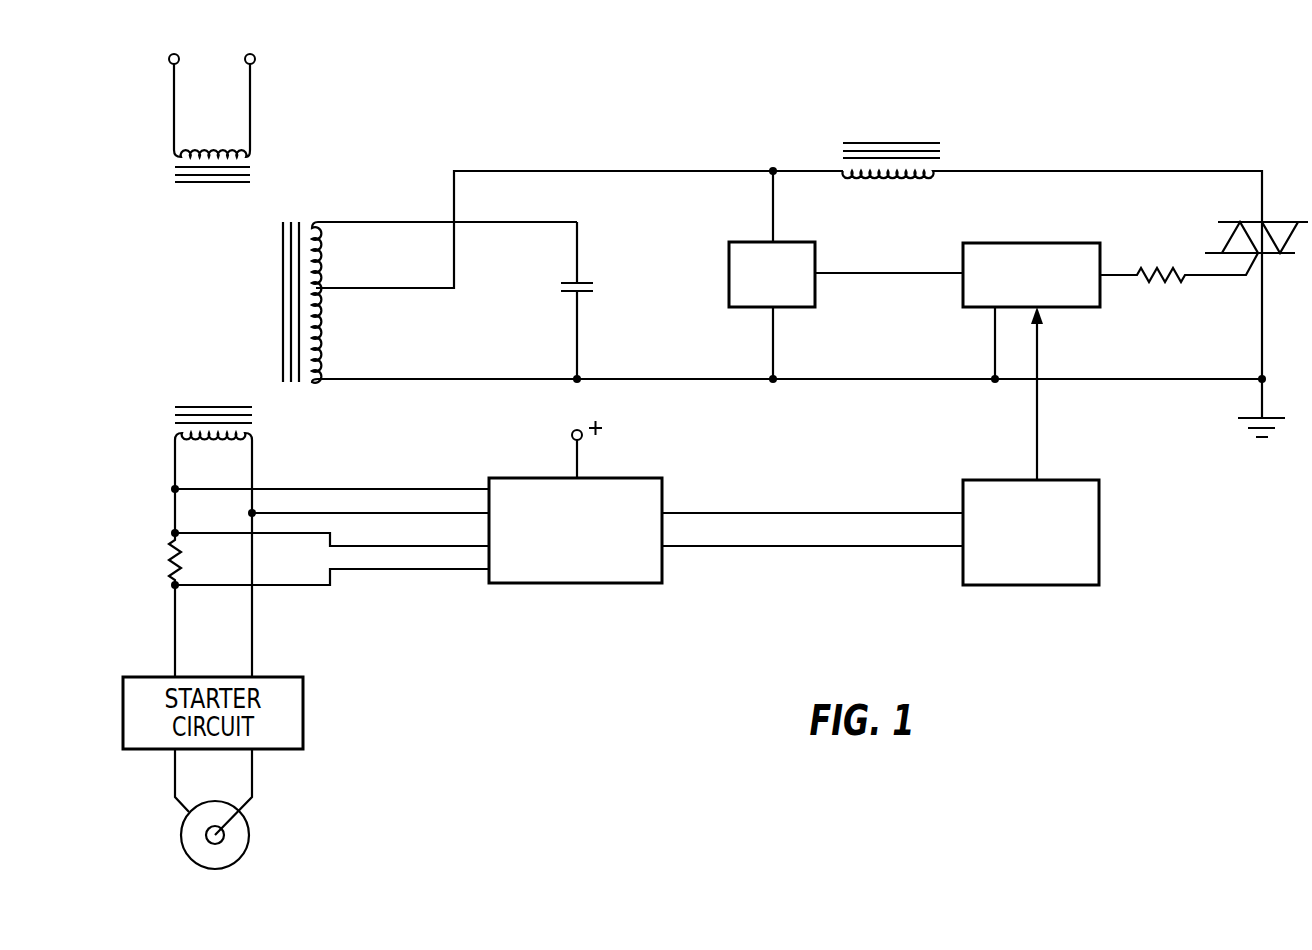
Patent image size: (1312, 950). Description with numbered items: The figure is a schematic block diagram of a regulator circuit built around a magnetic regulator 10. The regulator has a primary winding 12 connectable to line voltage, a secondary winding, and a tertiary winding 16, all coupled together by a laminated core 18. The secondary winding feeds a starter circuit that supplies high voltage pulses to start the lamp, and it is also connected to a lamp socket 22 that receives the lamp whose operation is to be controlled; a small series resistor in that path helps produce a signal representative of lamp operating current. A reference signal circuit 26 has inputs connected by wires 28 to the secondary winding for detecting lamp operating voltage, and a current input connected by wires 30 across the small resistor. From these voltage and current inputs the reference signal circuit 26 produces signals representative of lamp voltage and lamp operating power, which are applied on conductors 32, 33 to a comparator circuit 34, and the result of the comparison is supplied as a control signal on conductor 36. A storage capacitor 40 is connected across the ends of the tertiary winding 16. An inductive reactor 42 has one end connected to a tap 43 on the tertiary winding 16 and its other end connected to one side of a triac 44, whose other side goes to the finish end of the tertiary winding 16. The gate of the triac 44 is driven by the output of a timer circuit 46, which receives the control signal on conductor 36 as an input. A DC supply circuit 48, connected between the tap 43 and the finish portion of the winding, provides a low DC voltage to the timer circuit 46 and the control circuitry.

The magnetic regulator 10 is at (254, 292).
The primary winding 12 is at (212, 150).
The tertiary winding 16 is at (318, 238).
The laminated core 18 is at (283, 305).
The tap 43 is at (316, 288).
The storage capacitor 40 is at (580, 280).
The inductive reactor 42 is at (940, 162).
The triac 44 is at (1273, 219).
The timer circuit 46 is at (1078, 309).
The DC supply circuit 48 is at (748, 310).
The conductor 36 is at (1052, 393).
The wires 28 is at (332, 512).
The wires 30 is at (350, 548).
The conductors 32 is at (782, 511).
The reference output line 33 is at (757, 548).
The reference signal circuit 26 is at (612, 584).
The comparator circuit 34 is at (1100, 533).
The lamp socket 22 is at (249, 832).